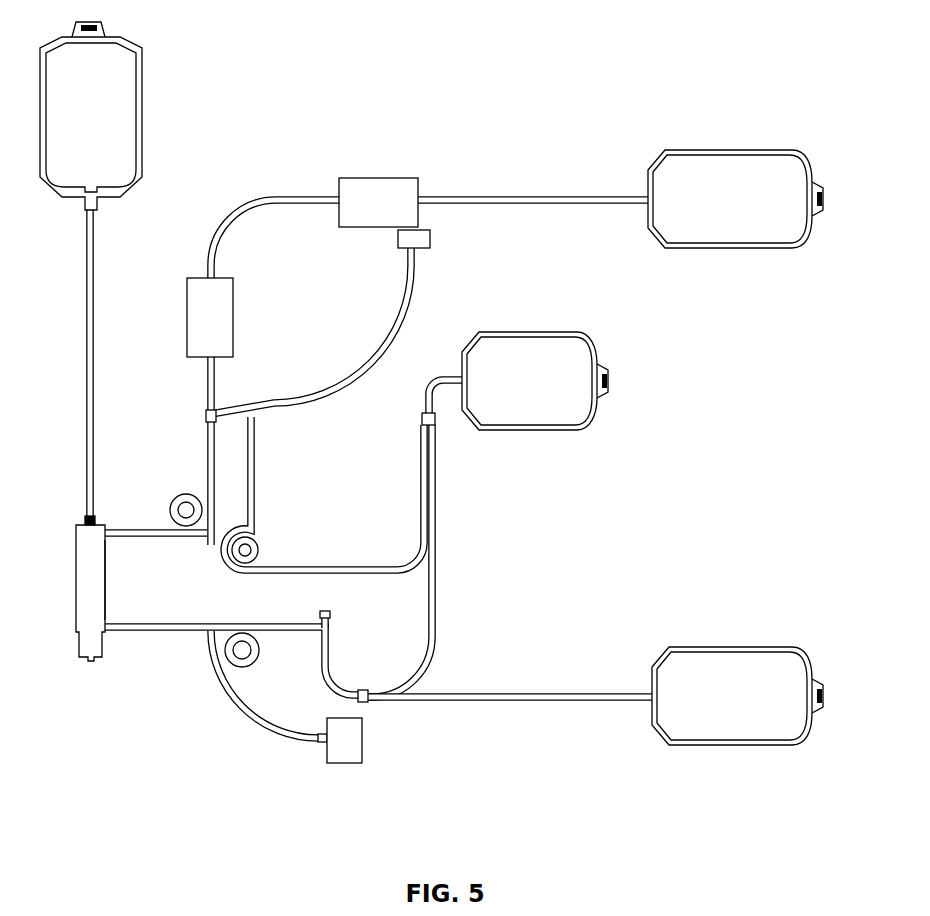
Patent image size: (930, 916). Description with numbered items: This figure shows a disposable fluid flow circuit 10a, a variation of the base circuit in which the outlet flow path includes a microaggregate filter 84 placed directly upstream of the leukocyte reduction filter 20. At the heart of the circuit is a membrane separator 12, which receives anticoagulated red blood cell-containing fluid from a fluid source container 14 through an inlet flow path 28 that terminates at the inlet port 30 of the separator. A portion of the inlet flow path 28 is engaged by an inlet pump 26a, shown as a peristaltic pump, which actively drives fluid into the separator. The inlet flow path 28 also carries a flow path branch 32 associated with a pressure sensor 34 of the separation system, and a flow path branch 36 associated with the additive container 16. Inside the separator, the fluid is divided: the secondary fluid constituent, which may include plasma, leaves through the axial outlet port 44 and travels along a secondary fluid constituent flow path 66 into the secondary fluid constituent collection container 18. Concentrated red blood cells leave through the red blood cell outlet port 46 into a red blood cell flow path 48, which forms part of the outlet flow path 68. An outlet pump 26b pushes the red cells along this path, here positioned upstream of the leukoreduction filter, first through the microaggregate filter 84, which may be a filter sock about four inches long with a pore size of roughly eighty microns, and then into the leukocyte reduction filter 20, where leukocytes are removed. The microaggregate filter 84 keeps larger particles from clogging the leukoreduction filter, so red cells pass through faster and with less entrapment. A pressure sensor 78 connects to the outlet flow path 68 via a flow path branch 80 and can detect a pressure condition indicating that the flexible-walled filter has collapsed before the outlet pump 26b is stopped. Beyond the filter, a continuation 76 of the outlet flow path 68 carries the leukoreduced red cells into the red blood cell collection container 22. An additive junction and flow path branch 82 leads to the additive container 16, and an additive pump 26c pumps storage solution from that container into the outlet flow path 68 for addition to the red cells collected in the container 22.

The fluid flow circuit 10a is at (423, 422).
The membrane separator 12 is at (81, 560).
The fluid source container 14 is at (737, 696).
The additive container 16 is at (515, 381).
The secondary fluid constituent collection container 18 is at (91, 116).
The leukocyte reduction filter 20 is at (378, 202).
The red blood cell collection container 22 is at (735, 199).
The inlet pump 26a is at (254, 663).
The outlet pump 26b is at (184, 494).
The additive pump 26c is at (260, 550).
The inlet flow path 28 is at (508, 704).
The inlet port 30 is at (106, 633).
The flow path branch 32 is at (239, 712).
The pressure sensor 34 is at (345, 764).
The flow path branch 36 is at (436, 652).
The axial outlet port 44 is at (82, 523).
The red blood cell outlet port 46 is at (105, 541).
The red blood cell flow path 48 is at (143, 529).
The secondary fluid constituent flow path 66 is at (87, 335).
The outlet flow path 68 is at (533, 204).
The continuation of the outlet flow path 76 is at (520, 206).
The pressure sensor 78 is at (431, 240).
The flow path branch 80 is at (372, 358).
The additive junction and flow path branch 82 is at (355, 575).
The microaggregate filter 84 is at (263, 372).